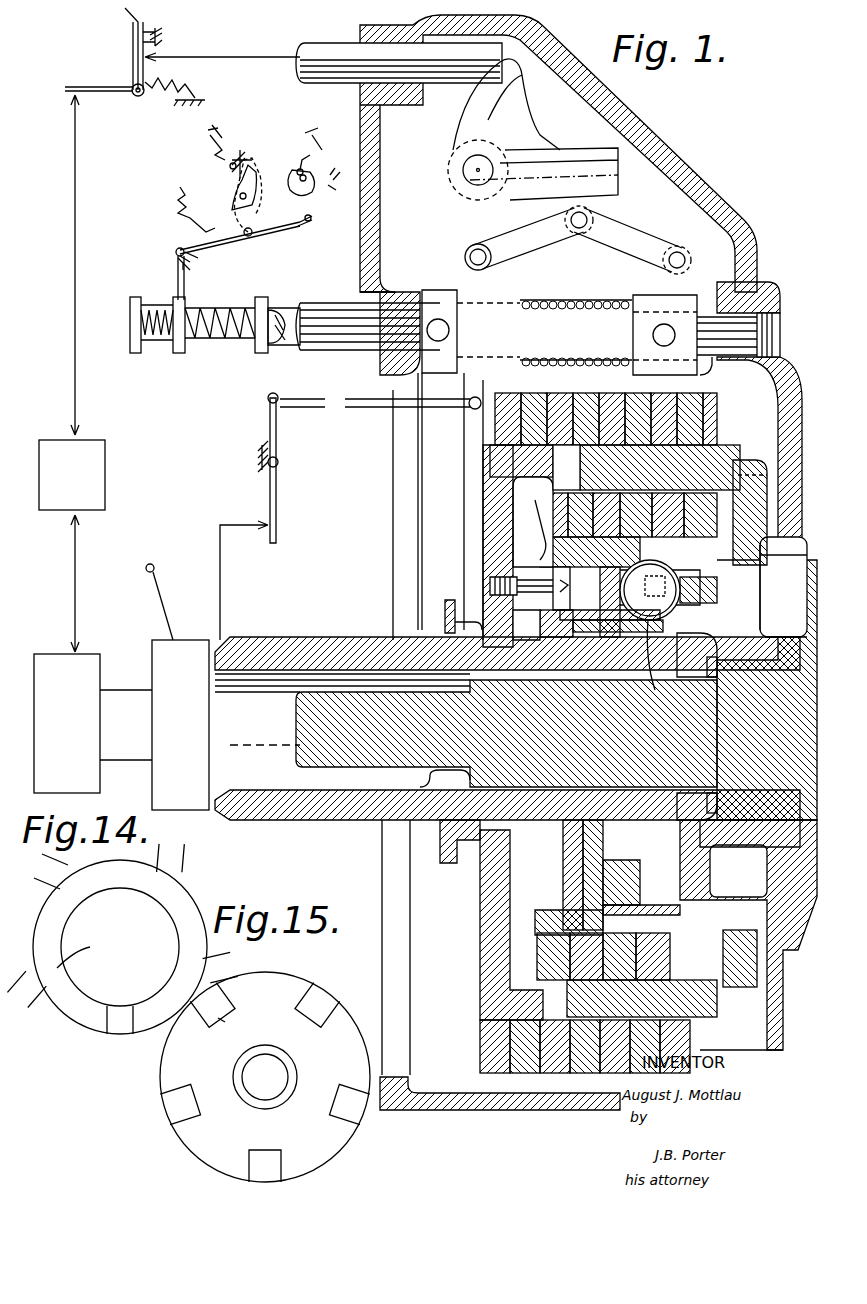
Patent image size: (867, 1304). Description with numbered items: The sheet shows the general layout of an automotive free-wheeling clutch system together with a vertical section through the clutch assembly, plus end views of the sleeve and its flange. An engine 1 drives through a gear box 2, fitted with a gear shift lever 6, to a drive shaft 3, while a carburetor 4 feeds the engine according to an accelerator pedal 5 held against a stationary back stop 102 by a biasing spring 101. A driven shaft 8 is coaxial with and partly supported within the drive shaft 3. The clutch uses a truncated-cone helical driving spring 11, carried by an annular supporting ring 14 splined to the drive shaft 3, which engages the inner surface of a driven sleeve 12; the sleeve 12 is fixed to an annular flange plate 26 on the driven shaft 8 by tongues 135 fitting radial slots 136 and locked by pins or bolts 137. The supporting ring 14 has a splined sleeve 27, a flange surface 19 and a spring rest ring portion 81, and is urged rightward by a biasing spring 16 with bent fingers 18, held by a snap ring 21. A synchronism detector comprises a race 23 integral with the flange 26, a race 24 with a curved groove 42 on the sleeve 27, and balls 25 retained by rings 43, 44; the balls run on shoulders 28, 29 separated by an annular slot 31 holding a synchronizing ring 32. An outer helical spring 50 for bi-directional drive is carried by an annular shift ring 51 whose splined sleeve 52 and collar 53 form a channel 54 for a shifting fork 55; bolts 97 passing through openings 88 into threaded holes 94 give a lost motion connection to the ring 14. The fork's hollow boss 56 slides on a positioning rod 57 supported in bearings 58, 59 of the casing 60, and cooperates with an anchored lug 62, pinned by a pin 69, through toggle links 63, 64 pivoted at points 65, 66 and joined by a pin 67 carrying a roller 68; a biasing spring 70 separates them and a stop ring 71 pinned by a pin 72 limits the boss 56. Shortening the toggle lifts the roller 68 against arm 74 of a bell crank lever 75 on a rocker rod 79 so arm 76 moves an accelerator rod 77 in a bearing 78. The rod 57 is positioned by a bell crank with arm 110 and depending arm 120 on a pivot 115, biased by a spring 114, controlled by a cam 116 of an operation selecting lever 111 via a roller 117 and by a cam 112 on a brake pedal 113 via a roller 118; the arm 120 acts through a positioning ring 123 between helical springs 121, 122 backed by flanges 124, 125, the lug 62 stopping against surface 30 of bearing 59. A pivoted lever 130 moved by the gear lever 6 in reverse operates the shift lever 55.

In FIG. 1, the engine 1 is at (85, 770).
In FIG. 1, the gear box 2 is at (150, 782).
In FIG. 1, the drive shaft 3 is at (372, 820).
In FIG. 1, the carburetor 4 is at (83, 508).
In FIG. 1, the accelerator pedal 5 is at (125, 25).
In FIG. 1, the gear shift lever 6 is at (146, 568).
In FIG. 1, the driven shaft 8 is at (290, 750).
In FIG. 1, the helical driving spring 11 is at (700, 575).
In FIG. 1, the driven sleeve 12 is at (733, 465).
In FIG. 14, the driven sleeve 12 is at (82, 1007).
In FIG. 1, the annular supporting ring 14 is at (545, 557).
In FIG. 1, the biasing spring 16 is at (601, 629).
In FIG. 1, the resilient bent fingers 18 is at (560, 890).
In FIG. 1, the outer surface of supporting ring 19 is at (566, 895).
In FIG. 1, the snap ring 21 is at (500, 965).
In FIG. 1, the race 23 is at (690, 815).
In FIG. 1, the race 24 is at (605, 575).
In FIG. 1, the balls 25 is at (680, 535).
In FIG. 1, the annular flange plate 26 is at (740, 605).
In FIG. 15, the annular flange plate 26 is at (198, 1127).
In FIG. 1, the sleeve 27 is at (520, 800).
In FIG. 1, the shoulder or runway 28 is at (778, 560).
In FIG. 1, the shoulder or runway 29 is at (740, 625).
In FIG. 1, the inner surface of bearing 30 is at (717, 368).
In FIG. 1, the annular slot 31 is at (760, 585).
In FIG. 1, the synchronizing ring 32 is at (630, 880).
In FIG. 1, the curved groove 42 is at (612, 600).
In FIG. 1, the ring 43 is at (664, 668).
In FIG. 1, the ring 44 is at (672, 530).
In FIG. 1, the outer helical spring 50 is at (712, 425).
In FIG. 1, the annular shift ring 51 is at (495, 482).
In FIG. 1, the splined sleeve 52 is at (440, 630).
In FIG. 1, the flange or collar 53 is at (480, 612).
In FIG. 1, the channel 54 is at (455, 625).
In FIG. 1, the shifting lever or fork 55 is at (470, 455).
In FIG. 1, the hollow boss 56 is at (470, 372).
In FIG. 1, the supporting and positioning rod 57 is at (550, 365).
In FIG. 1, the bearing 58 is at (372, 372).
In FIG. 1, the bearing 59 is at (770, 370).
In FIG. 1, the casing 60 is at (758, 218).
In FIG. 1, the anchored lug 62 is at (665, 372).
In FIG. 1, the link 63 is at (542, 250).
In FIG. 1, the link 64 is at (620, 255).
In FIG. 1, the pivot point 65 is at (468, 248).
In FIG. 1, the pivot point 66 is at (686, 258).
In FIG. 1, the pin 67 is at (640, 250).
In FIG. 1, the roller 68 is at (594, 210).
In FIG. 1, the pin 69 is at (676, 333).
In FIG. 1, the biasing spring 70 is at (608, 368).
In FIG. 1, the stop ring 71 is at (425, 292).
In FIG. 1, the pin 72 is at (350, 303).
In FIG. 1, the arm of bell crank lever 74 is at (620, 178).
In FIG. 1, the bell crank lever 75 is at (460, 168).
In FIG. 1, the arm of bell crank lever 76 is at (538, 85).
In FIG. 1, the accelerator rod 77 is at (448, 85).
In FIG. 1, the bearing 78 is at (362, 92).
In FIG. 1, the rocker rod 79 is at (470, 180).
In FIG. 1, the spring rest ring portion 81 is at (533, 522).
In FIG. 1, the central opening 88 is at (520, 550).
In FIG. 1, the threaded hole 94 is at (520, 570).
In FIG. 1, the bolt 97 is at (520, 590).
In FIG. 1, the biasing spring 101 is at (175, 97).
In FIG. 1, the stationary back stop 102 is at (160, 30).
In FIG. 1, the arm of bell crank 110 is at (232, 240).
In FIG. 1, the operation selecting lever 111 is at (248, 155).
In FIG. 1, the cam 112 is at (312, 195).
In FIG. 1, the brake pedal 113 is at (312, 140).
In FIG. 1, the biasing spring 114 is at (180, 210).
In FIG. 1, the fixed rod or pivot 115 is at (176, 250).
In FIG. 1, the cam 116 is at (238, 194).
In FIG. 1, the pin or roller 117 is at (252, 236).
In FIG. 1, the pin or roller 118 is at (310, 224).
In FIG. 1, the depending arm 120 is at (184, 288).
In FIG. 1, the helical spring 121 is at (152, 345).
In FIG. 1, the helical spring 122 is at (220, 340).
In FIG. 1, the positioning ring 123 is at (182, 355).
In FIG. 1, the flange 124 is at (136, 352).
In FIG. 1, the flange 125 is at (260, 355).
In FIG. 1, the pivoted lever 130 is at (280, 495).
In FIG. 14, the tongues or extensions 135 is at (83, 893).
In FIG. 15, the radial slots 136 is at (220, 1018).
In FIG. 1, the pins or bolts 137 is at (748, 472).